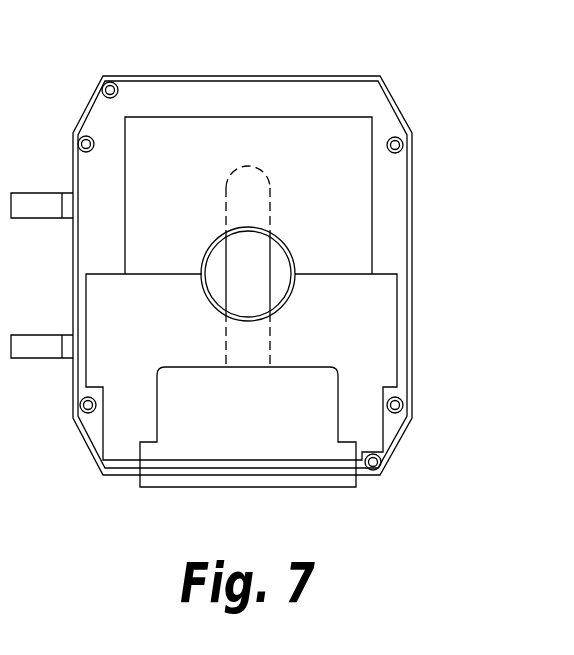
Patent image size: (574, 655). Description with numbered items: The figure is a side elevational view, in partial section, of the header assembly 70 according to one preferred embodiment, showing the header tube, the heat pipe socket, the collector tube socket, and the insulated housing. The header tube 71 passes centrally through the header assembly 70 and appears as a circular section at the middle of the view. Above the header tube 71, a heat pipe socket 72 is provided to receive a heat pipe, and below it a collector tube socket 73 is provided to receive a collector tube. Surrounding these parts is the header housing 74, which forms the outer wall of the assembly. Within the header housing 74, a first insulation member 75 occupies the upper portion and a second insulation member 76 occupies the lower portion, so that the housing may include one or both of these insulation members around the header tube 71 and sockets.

The header assembly 70 is at (443, 175).
The header tube 71 is at (277, 263).
The heat pipe socket 72 is at (233, 186).
The collector tube socket 73 is at (183, 406).
The header housing 74 is at (395, 100).
The first insulation member 75 is at (303, 150).
The second insulation member 76 is at (360, 327).